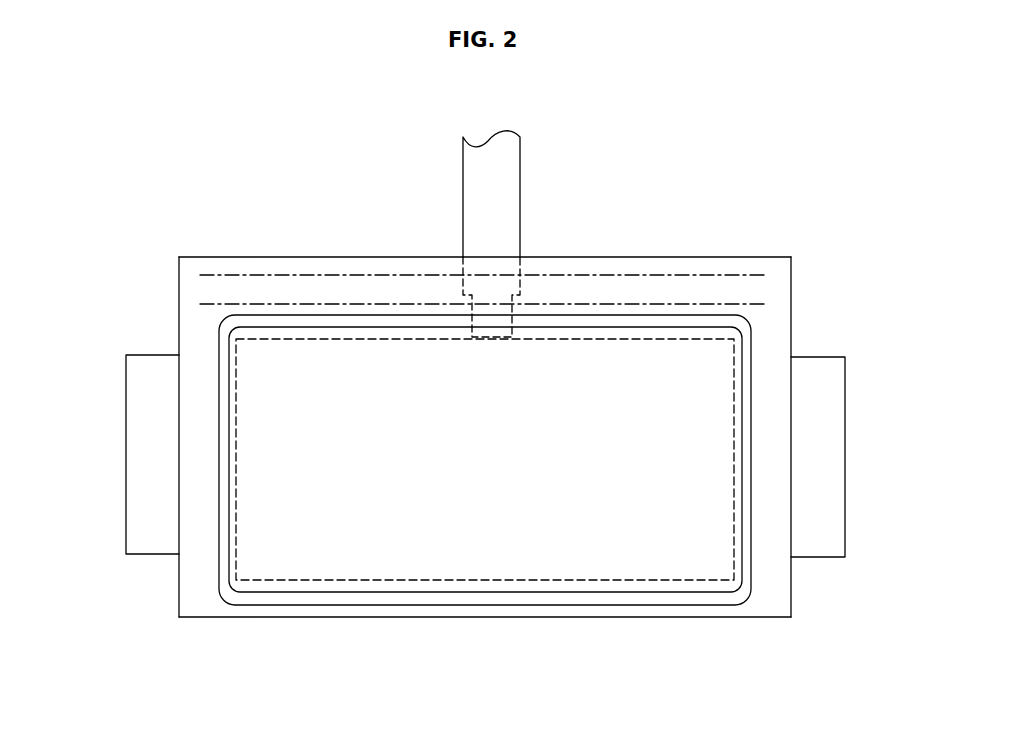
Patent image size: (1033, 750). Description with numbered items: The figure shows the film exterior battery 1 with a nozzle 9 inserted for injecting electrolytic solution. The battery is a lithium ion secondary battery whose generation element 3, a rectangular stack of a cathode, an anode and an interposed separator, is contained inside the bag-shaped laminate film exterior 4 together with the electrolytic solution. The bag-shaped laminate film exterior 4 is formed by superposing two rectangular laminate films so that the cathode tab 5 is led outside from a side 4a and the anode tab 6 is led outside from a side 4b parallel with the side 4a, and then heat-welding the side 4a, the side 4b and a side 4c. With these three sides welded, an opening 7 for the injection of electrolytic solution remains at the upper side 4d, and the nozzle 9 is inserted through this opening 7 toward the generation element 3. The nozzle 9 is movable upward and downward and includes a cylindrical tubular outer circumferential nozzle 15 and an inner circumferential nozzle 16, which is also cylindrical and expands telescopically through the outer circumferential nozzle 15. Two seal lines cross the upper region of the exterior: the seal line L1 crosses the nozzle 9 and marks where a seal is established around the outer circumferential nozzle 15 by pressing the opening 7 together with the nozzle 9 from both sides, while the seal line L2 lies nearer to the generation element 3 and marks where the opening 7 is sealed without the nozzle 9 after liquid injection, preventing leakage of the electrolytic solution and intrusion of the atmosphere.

The film exterior battery 1 is at (748, 119).
The generation element 3 is at (444, 570).
The bag-shaped laminate film exterior 4 is at (771, 267).
The side 4a is at (179, 591).
The side 4b is at (793, 594).
The side 4c is at (617, 618).
The upper side 4d is at (661, 257).
The cathode tab 5 is at (148, 500).
The anode tab 6 is at (835, 487).
The opening 7 is at (428, 244).
The nozzle 9 is at (626, 125).
The outer circumferential nozzle 15 is at (507, 178).
The inner circumferential nozzle 16 is at (513, 320).
The seal line L1 is at (768, 277).
The seal line L2 is at (768, 305).